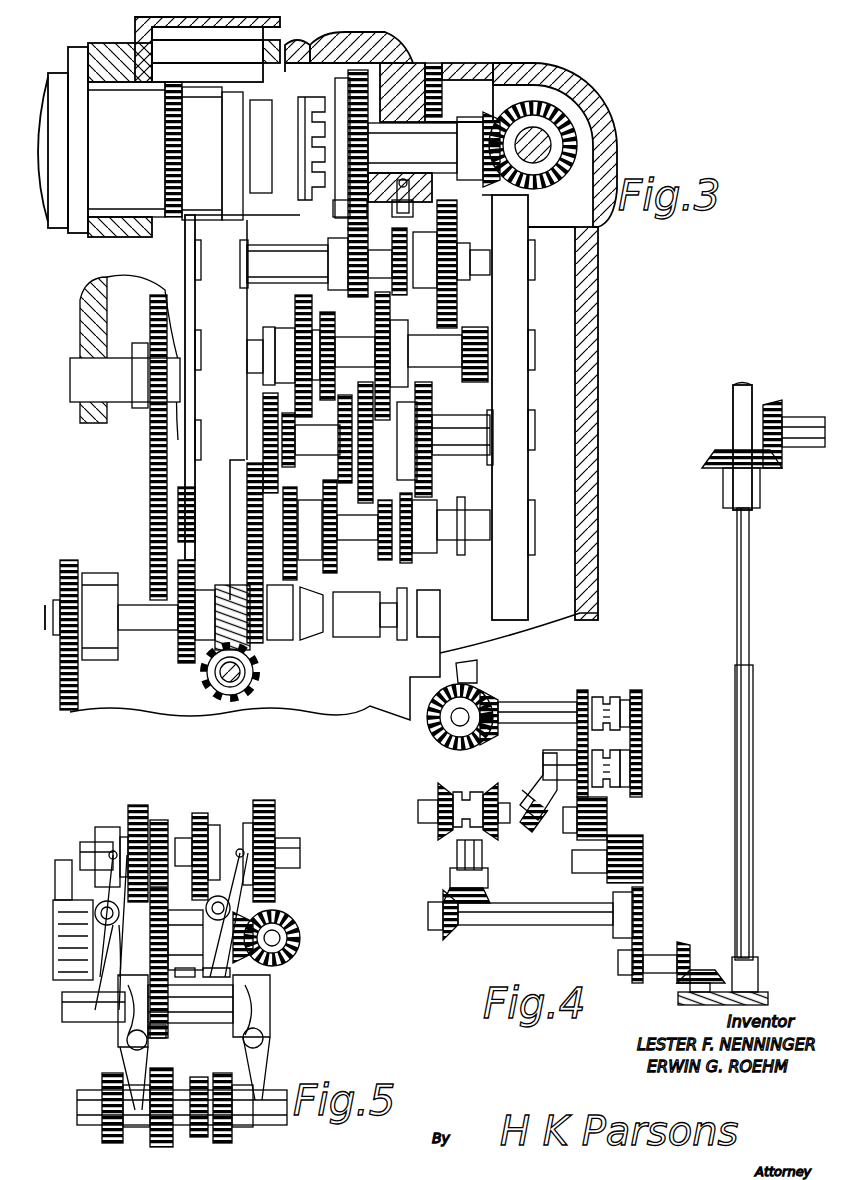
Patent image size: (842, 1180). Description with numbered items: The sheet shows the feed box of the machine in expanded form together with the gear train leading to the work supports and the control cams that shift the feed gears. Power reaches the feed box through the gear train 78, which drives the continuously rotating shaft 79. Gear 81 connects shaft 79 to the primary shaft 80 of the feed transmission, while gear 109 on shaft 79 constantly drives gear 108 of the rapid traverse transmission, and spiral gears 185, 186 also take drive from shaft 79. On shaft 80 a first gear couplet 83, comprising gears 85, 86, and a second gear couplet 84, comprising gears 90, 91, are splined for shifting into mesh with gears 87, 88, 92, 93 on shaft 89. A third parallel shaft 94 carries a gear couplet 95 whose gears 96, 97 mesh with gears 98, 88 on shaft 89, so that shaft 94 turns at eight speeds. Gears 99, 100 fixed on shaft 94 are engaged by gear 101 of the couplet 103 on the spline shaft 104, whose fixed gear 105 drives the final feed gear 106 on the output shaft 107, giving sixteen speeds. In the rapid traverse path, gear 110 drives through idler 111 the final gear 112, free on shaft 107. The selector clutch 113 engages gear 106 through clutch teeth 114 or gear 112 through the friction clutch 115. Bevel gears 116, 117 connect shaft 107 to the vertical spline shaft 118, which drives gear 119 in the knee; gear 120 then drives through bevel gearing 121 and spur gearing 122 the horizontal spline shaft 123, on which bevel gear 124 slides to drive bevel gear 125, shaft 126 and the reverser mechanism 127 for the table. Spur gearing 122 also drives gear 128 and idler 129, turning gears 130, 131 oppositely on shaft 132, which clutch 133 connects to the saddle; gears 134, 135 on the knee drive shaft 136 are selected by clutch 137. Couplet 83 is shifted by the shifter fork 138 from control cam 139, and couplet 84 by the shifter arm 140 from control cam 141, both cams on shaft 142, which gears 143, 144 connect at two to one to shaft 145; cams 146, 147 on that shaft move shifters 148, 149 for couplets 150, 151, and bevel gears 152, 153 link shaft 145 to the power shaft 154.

In FIG. 3, the gear train 78 is at (78, 693).
In FIG. 3, the shaft 79 is at (142, 620).
In FIG. 3, the primary shaft 80 is at (262, 562).
In FIG. 3, the gear 81 is at (250, 575).
In FIG. 3, the first gear couplet 83 is at (310, 510).
In FIG. 5, the first gear couplet 83 is at (130, 1125).
In FIG. 3, the second gear couplet 84 is at (425, 545).
In FIG. 5, the second gear couplet 84 is at (215, 1125).
In FIG. 3, the gear 85 is at (293, 570).
In FIG. 3, the gear 86 is at (333, 577).
In FIG. 3, the gear 87 is at (278, 478).
In FIG. 3, the gear 88 is at (347, 428).
In FIG. 3, the shaft 89 is at (460, 437).
In FIG. 3, the gear 90 is at (385, 560).
In FIG. 3, the gear 91 is at (405, 562).
In FIG. 3, the gear 92 is at (372, 490).
In FIG. 3, the gear 93 is at (432, 470).
In FIG. 3, the third parallel shaft 94 is at (420, 352).
In FIG. 3, the gear couplet 95 is at (269, 327).
In FIG. 3, the gear 96 is at (297, 300).
In FIG. 3, the gear 97 is at (335, 316).
In FIG. 3, the gear 98 is at (295, 435).
In FIG. 3, the gear 99 is at (392, 378).
In FIG. 3, the gear 100 is at (470, 383).
In FIG. 3, the gear 101 is at (395, 230).
In FIG. 3, the couplet 103 is at (448, 210).
In FIG. 3, the spline shaft 104 is at (262, 266).
In FIG. 3, the gear 105 is at (333, 233).
In FIG. 3, the gear 106 is at (367, 42).
In FIG. 3, the final output shaft 107 is at (440, 140).
In FIG. 4, the final output shaft 107 is at (800, 430).
In FIG. 3, the gear 108 is at (186, 487).
In FIG. 3, the gear 109 is at (185, 665).
In FIG. 3, the gear 110 is at (150, 492).
In FIG. 3, the intermediate idler 111 is at (150, 310).
In FIG. 3, the final gear 112 is at (170, 83).
In FIG. 3, the feed-rapid traverse selector clutch 113 is at (305, 97).
In FIG. 3, the clutch teeth 114 is at (357, 70).
In FIG. 3, the friction clutch 115 is at (212, 99).
In FIG. 3, the bevel gear 116 is at (492, 112).
In FIG. 4, the bevel gear 116 is at (770, 410).
In FIG. 3, the bevel gear 117 is at (552, 101).
In FIG. 4, the bevel gear 117 is at (715, 455).
In FIG. 3, the vertical spline shaft 118 is at (550, 150).
In FIG. 4, the vertical spline shaft 118 is at (748, 605).
In FIG. 4, the gear 119 is at (750, 975).
In FIG. 4, the gear 120 is at (678, 998).
In FIG. 4, the bevel gearing 121 is at (692, 950).
In FIG. 4, the spur gearing 122 is at (655, 958).
In FIG. 4, the horizontal spline shaft 123 is at (545, 915).
In FIG. 4, the bevel gear 124 is at (450, 932).
In FIG. 4, the bevel gear 125 is at (490, 893).
In FIG. 4, the shaft 126 is at (482, 857).
In FIG. 4, the reverser mechanism 127 is at (460, 792).
In FIG. 4, the gear 128 is at (643, 840).
In FIG. 4, the idler 129 is at (607, 822).
In FIG. 4, the gear 130 is at (577, 755).
In FIG. 4, the gear 131 is at (645, 760).
In FIG. 4, the shaft 132 is at (545, 752).
In FIG. 4, the clutch 133 is at (620, 780).
In FIG. 4, the gear 134 is at (583, 690).
In FIG. 4, the gear 135 is at (637, 690).
In FIG. 4, the knee drive shaft 136 is at (530, 688).
In FIG. 4, the clutch 137 is at (610, 695).
In FIG. 5, the shifter fork 138 is at (125, 1058).
In FIG. 5, the control cam 139 is at (125, 1015).
In FIG. 5, the shifter arm 140 is at (258, 1055).
In FIG. 5, the control cam 141 is at (265, 1000).
In FIG. 5, the shaft 142 is at (197, 1005).
In FIG. 5, the gear 143 is at (155, 1038).
In FIG. 5, the gear 144 is at (168, 908).
In FIG. 5, the shaft 145 is at (185, 962).
In FIG. 5, the cam 146 is at (60, 1000).
In FIG. 5, the cam 147 is at (250, 975).
In FIG. 5, the shifter 148 is at (105, 857).
In FIG. 5, the shifter 149 is at (218, 860).
In FIG. 5, the couplet 150 is at (128, 830).
In FIG. 5, the couplet 151 is at (210, 828).
In FIG. 5, the bevel gear 152 is at (256, 915).
In FIG. 5, the bevel gear 153 is at (285, 940).
In FIG. 5, the power shaft 154 is at (272, 957).
In FIG. 3, the spiral gear 185 is at (258, 650).
In FIG. 3, the spiral gear 186 is at (255, 692).